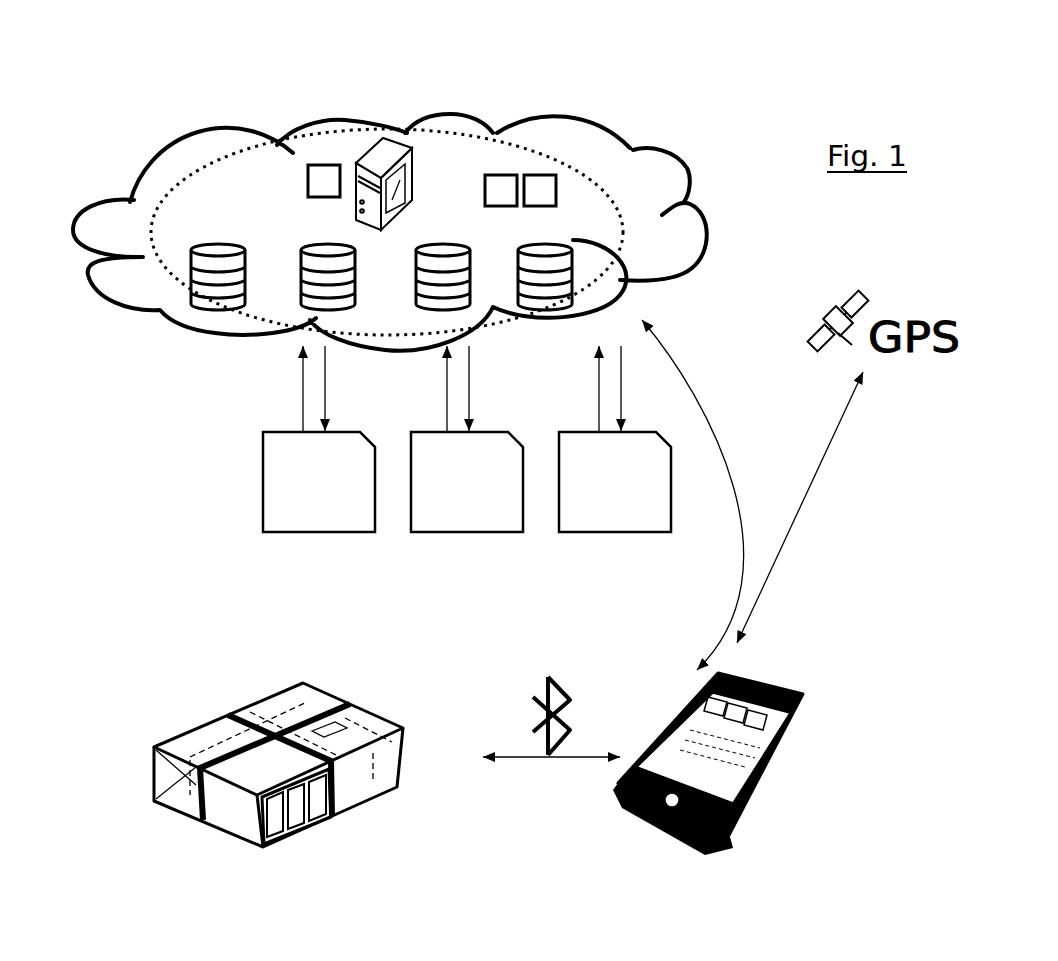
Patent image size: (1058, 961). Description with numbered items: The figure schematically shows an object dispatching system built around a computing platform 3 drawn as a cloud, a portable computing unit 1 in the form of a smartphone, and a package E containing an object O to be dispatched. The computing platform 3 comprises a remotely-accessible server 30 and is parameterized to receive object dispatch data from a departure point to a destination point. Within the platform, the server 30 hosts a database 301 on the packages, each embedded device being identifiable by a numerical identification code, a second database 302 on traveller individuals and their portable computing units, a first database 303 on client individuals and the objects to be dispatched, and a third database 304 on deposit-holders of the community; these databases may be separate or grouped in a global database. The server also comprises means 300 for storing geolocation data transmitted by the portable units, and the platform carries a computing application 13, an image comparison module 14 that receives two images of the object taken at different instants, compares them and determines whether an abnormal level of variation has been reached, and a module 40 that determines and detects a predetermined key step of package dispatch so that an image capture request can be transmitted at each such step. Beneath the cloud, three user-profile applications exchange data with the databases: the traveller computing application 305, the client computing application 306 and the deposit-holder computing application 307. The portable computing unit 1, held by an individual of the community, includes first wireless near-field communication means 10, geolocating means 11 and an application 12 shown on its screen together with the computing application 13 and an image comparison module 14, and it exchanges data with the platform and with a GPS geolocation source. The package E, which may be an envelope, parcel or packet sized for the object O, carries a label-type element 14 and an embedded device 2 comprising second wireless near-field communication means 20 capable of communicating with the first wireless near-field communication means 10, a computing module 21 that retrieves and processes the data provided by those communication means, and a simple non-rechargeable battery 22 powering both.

The computing unit 1 is at (775, 710).
The first wireless near-field communication means 10 is at (735, 670).
The geolocating means 11 is at (757, 685).
The terminal application 12 is at (770, 718).
The computing application 13 is at (310, 165).
The image comparison module 14 is at (500, 175).
The embedded device 2 is at (257, 843).
The second wireless near-field communication means 20 is at (272, 840).
The computing module 21 is at (295, 835).
The non-rechargeable battery 22 is at (318, 815).
The computing platform 3 is at (200, 167).
The server 30 is at (360, 150).
The means for storing geolocation data 300 is at (405, 148).
The database on the packages 301 is at (200, 244).
The second database 302 is at (328, 245).
The first database 303 is at (455, 245).
The third database 304 is at (555, 242).
The traveller computing application 305 is at (298, 490).
The client computing application 306 is at (446, 490).
The deposit-holder computing application 307 is at (594, 490).
The module to determine and detect a predetermined key step 40 is at (541, 175).
The package E is at (296, 779).
The object O is at (362, 780).